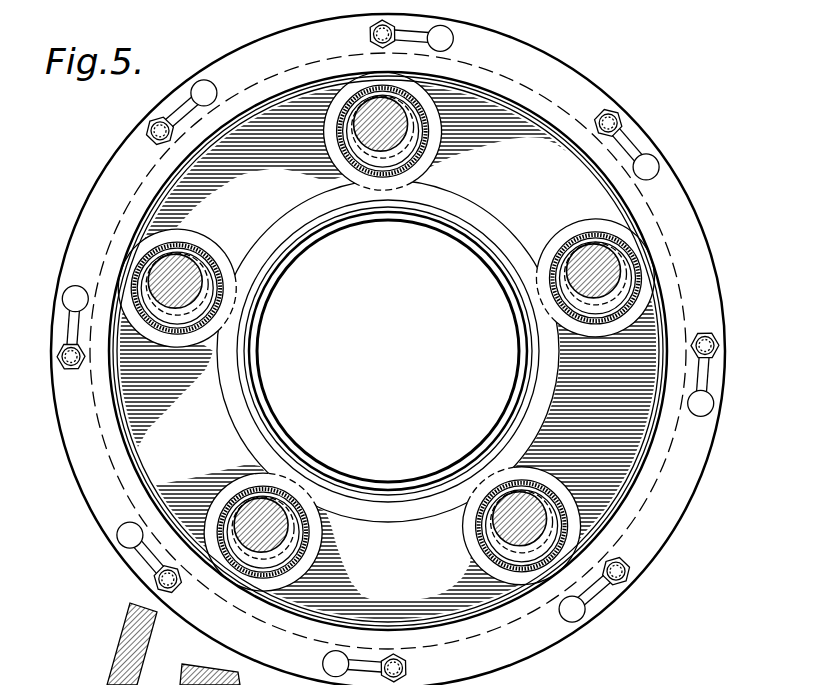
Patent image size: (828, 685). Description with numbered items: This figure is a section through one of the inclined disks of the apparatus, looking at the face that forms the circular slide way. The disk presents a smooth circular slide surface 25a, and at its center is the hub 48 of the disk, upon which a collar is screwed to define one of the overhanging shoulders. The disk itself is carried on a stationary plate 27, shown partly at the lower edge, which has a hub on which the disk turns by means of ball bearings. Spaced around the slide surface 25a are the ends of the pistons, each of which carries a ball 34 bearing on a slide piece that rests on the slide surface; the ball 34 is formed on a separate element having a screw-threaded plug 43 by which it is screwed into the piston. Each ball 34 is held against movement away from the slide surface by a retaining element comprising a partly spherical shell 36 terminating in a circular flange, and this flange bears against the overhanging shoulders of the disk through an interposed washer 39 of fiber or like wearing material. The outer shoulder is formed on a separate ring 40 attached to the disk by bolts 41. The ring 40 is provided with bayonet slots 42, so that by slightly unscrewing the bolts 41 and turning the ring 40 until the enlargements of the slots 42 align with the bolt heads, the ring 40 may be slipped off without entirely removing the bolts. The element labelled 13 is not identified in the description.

The annular flange 13 is at (298, 217).
The smooth circular surface 25a is at (160, 467).
The stationary plate 27 is at (98, 684).
The ball 34 is at (491, 537).
The partly spherical shell 36 is at (347, 127).
The washer 39 is at (330, 148).
The ring 40 is at (704, 279).
The bolt 41 is at (712, 344).
The bayonet slot 42 is at (707, 374).
The screw-threaded plug 43 is at (403, 150).
The hub 48 is at (280, 263).